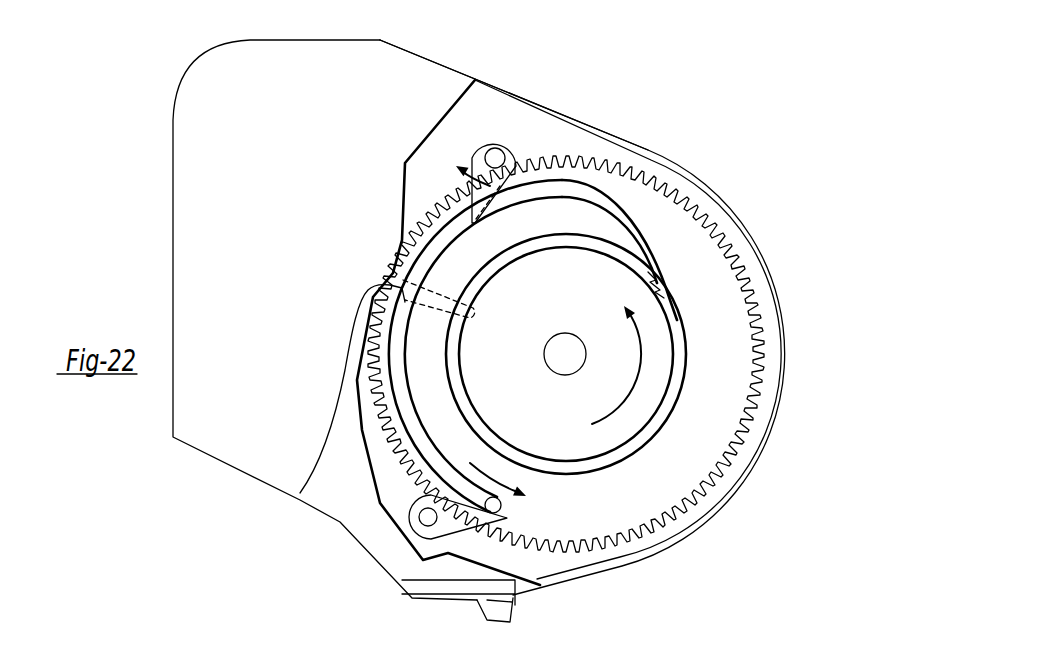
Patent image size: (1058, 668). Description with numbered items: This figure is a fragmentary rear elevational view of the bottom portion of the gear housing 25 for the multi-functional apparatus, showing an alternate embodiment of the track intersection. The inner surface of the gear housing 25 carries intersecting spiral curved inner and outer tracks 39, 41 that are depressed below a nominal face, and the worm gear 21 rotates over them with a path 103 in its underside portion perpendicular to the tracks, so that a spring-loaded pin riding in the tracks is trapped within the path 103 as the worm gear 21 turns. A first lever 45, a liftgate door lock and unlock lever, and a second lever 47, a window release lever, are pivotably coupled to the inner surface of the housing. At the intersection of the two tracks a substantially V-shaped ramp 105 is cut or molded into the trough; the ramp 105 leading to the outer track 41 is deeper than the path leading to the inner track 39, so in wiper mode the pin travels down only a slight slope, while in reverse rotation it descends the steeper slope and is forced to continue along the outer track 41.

The worm gear 21 is at (770, 380).
The gear housing 25 is at (748, 470).
The inner track 39 is at (680, 352).
The outer track 41 is at (588, 186).
The first lever 45 is at (502, 142).
The second lever 47 is at (420, 537).
The path 103 is at (300, 493).
The V-shaped ramp 105 is at (655, 280).